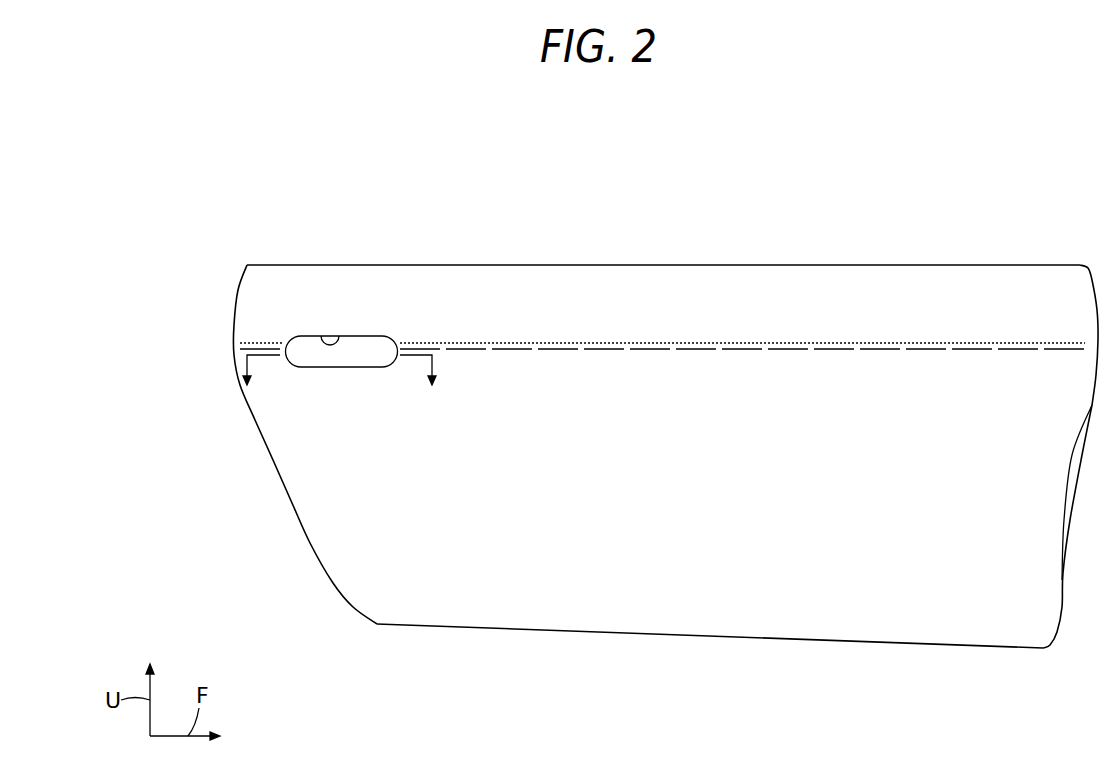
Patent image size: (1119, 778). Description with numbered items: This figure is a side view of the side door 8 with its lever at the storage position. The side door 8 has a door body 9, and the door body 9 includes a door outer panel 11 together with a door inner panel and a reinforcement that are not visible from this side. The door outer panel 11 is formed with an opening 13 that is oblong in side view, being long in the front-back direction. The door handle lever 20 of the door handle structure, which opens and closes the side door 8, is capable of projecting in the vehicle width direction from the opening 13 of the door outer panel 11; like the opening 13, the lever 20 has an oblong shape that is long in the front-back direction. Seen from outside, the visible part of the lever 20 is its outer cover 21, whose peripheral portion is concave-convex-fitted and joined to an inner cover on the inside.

The side door 8 is at (692, 229).
The door body 9 is at (589, 263).
The door outer panel 11 is at (700, 512).
The opening 13 is at (334, 336).
The door handle lever 20 is at (286, 260).
The outer cover 21 is at (350, 352).